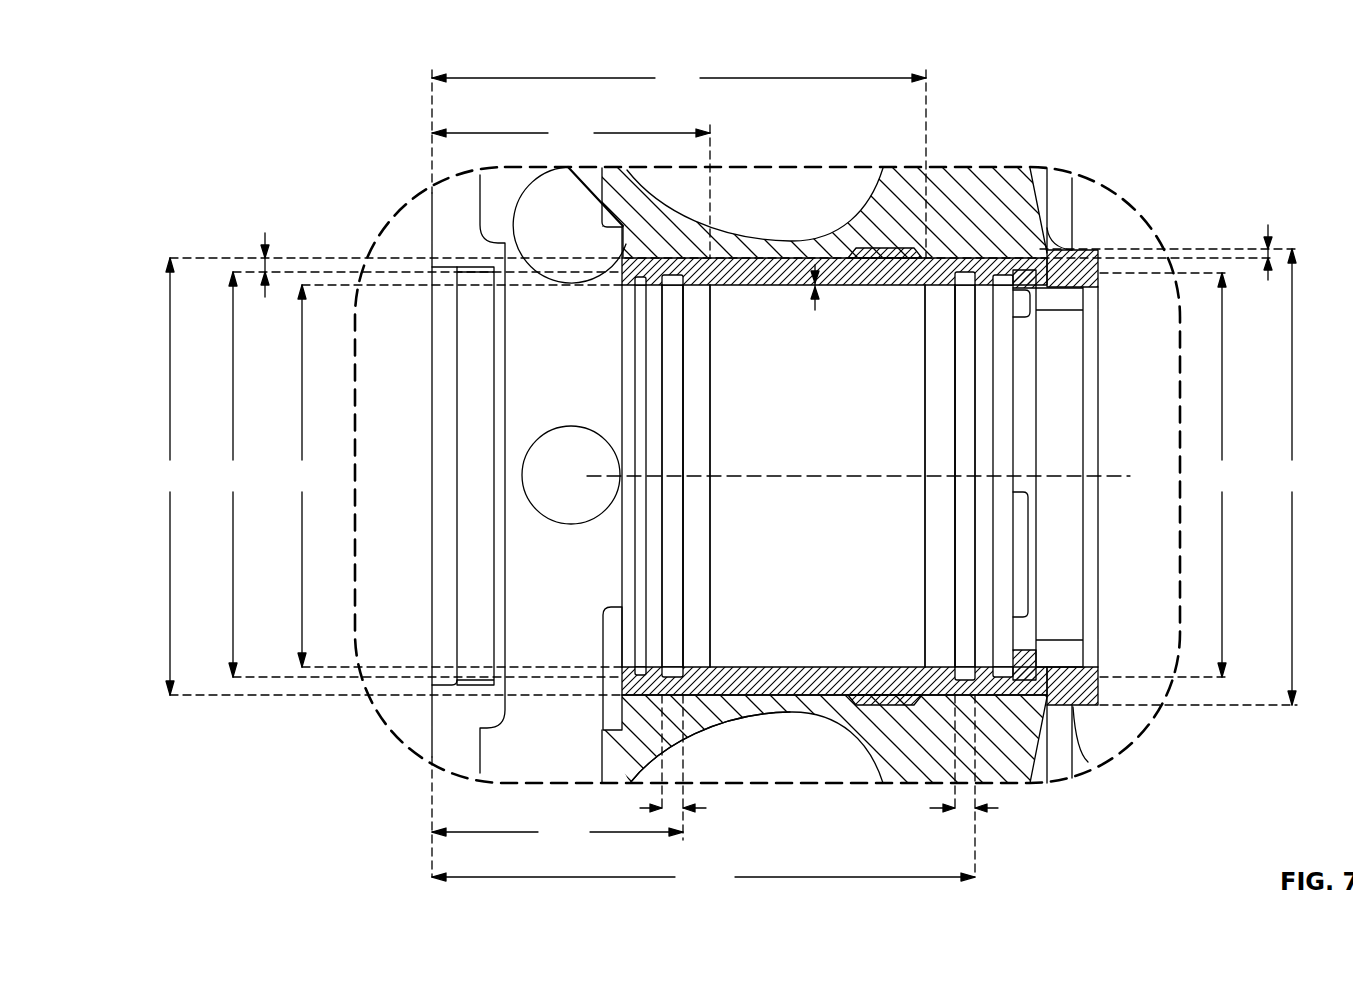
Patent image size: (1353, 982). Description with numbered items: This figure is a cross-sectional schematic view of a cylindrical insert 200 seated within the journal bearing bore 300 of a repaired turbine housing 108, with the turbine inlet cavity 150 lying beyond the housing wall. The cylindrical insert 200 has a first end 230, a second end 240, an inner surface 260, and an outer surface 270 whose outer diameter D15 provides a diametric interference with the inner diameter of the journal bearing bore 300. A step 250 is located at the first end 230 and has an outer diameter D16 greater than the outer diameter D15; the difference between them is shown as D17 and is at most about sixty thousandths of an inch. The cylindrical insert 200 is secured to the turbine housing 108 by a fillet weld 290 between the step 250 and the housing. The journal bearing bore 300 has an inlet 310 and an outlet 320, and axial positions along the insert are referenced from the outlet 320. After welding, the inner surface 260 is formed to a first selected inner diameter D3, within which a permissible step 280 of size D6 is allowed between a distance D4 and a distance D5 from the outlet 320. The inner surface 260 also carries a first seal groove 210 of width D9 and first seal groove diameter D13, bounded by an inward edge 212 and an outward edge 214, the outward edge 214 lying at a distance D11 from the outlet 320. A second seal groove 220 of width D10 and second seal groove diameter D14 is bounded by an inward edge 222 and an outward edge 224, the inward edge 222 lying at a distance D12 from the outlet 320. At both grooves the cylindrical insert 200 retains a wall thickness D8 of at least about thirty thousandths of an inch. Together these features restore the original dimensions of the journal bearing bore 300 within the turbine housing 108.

The journal bearing bore 300 is at (120, 80).
The turbine housing 108 is at (1003, 180).
The turbine inlet cavity 150 is at (806, 210).
The permissible step 280 is at (828, 262).
The fillet weld 290 is at (1073, 240).
The inner surface 260 is at (878, 287).
The cylindrical insert 200 is at (827, 685).
The outer surface 270 is at (766, 714).
The second end 240 is at (622, 688).
The step 250 is at (1047, 700).
The first end 230 is at (1090, 763).
The inlet 310 is at (1098, 607).
The outlet 320 is at (432, 497).
The second seal groove 220 is at (676, 368).
The outward edge 224 is at (663, 483).
The inward edge 222 is at (685, 557).
The first seal groove 210 is at (962, 378).
The outward edge 214 is at (973, 483).
The inward edge 212 is at (953, 557).
The first selected inner diameter D3 is at (453, 476).
The distance D4 is at (571, 189).
The distance D5 is at (679, 161).
The size D6 is at (810, 298).
The wall thickness D8 is at (265, 240).
The width D9 is at (950, 810).
The width D10 is at (700, 812).
The distance D11 is at (703, 878).
The distance D12 is at (557, 817).
The first seal groove diameter D13 is at (1173, 475).
The second seal groove diameter D14 is at (415, 474).
The outer diameter D15 is at (710, 476).
The outer diameter D16 is at (1178, 477).
The diameter difference D17 is at (1268, 233).